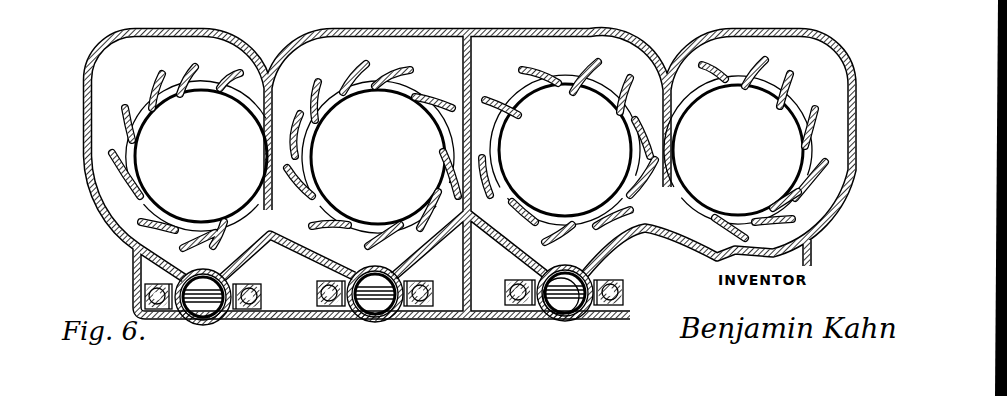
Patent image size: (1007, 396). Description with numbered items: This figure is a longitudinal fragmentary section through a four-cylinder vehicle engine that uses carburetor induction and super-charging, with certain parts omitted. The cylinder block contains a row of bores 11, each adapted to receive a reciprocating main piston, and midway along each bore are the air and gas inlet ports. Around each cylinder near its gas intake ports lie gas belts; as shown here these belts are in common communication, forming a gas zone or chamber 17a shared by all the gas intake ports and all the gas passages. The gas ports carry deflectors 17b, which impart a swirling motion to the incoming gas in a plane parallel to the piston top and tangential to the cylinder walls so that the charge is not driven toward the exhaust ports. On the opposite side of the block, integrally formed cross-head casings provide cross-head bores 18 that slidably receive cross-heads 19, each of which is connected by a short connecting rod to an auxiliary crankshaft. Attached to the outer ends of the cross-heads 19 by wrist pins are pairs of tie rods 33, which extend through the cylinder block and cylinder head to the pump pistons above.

The bore 11 is at (136, 163).
The gas zone or chamber 17a is at (468, 120).
The deflectors 17b is at (143, 228).
The tie rods 33 is at (250, 306).
The cross-heads 19 is at (377, 315).
The cross-head bores 18 is at (570, 313).